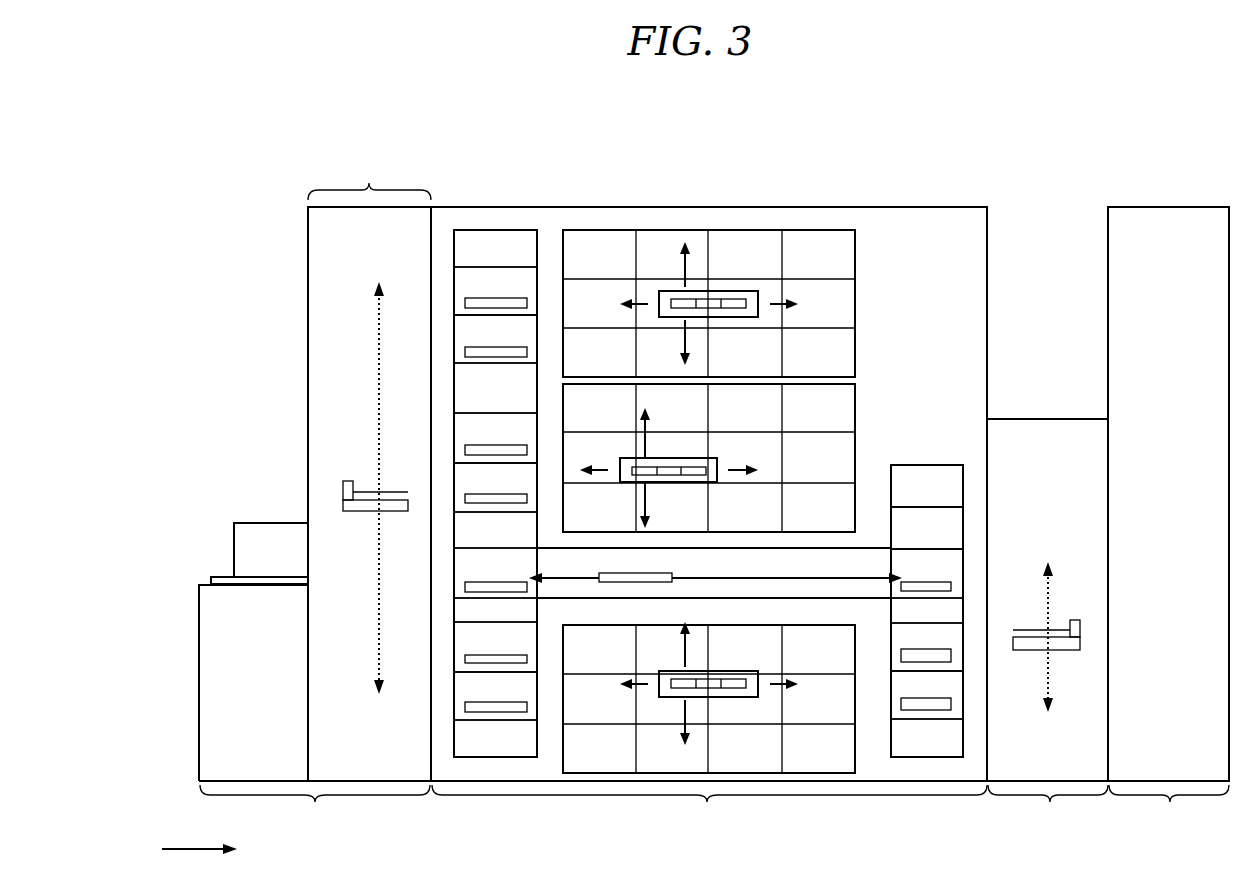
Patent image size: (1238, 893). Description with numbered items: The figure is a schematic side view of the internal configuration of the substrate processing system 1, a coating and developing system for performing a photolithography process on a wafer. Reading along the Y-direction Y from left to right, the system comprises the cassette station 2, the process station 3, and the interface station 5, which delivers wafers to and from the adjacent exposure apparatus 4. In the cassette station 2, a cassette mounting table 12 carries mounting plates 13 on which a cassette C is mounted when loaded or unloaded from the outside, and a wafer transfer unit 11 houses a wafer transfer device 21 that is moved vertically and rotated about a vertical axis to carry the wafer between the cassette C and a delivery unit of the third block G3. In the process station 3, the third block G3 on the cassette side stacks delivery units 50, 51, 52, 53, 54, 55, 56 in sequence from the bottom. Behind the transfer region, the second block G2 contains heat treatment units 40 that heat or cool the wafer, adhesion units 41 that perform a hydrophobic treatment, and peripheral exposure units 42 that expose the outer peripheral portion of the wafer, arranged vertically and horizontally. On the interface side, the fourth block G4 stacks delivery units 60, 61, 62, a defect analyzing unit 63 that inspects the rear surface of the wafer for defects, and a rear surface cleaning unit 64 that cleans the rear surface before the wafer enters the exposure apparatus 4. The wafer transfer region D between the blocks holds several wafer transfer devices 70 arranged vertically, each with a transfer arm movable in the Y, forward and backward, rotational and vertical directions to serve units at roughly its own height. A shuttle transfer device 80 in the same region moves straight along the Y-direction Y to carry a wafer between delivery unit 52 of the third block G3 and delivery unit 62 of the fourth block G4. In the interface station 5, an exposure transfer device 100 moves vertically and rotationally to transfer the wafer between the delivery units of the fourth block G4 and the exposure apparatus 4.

The substrate processing system 1 is at (705, 150).
The cassette station 2 is at (315, 810).
The process station 3 is at (709, 810).
The exposure apparatus 4 is at (1169, 810).
The interface station 5 is at (1048, 810).
The wafer transfer unit 11 is at (369, 179).
The cassette mounting table 12 is at (200, 632).
The mounting plate 13 is at (222, 580).
The cassette C is at (242, 550).
The wafer transfer device 21 is at (400, 492).
The third block G3 is at (490, 218).
The delivery unit 50 is at (453, 705).
The delivery unit 51 is at (453, 640).
The delivery unit 52 is at (453, 574).
The delivery unit 53 is at (453, 497).
The delivery unit 54 is at (453, 437).
The delivery unit 55 is at (453, 343).
The delivery unit 56 is at (453, 277).
The second block G2 is at (856, 217).
The peripheral exposure unit 42 is at (857, 244).
The adhesion unit 41 is at (857, 402).
The heat treatment unit 40 is at (847, 650).
The wafer transfer device 70 is at (748, 291).
The shuttle transfer device 80 is at (672, 574).
The wafer transfer region D is at (771, 577).
The fourth block G4 is at (938, 460).
The delivery unit 60 is at (964, 708).
The delivery unit 61 is at (964, 655).
The delivery unit 62 is at (964, 558).
The defect analyzing unit 63 is at (964, 518).
The rear surface cleaning unit 64 is at (964, 478).
The exposure transfer device 100 is at (1072, 620).
The Y-direction Y is at (208, 852).